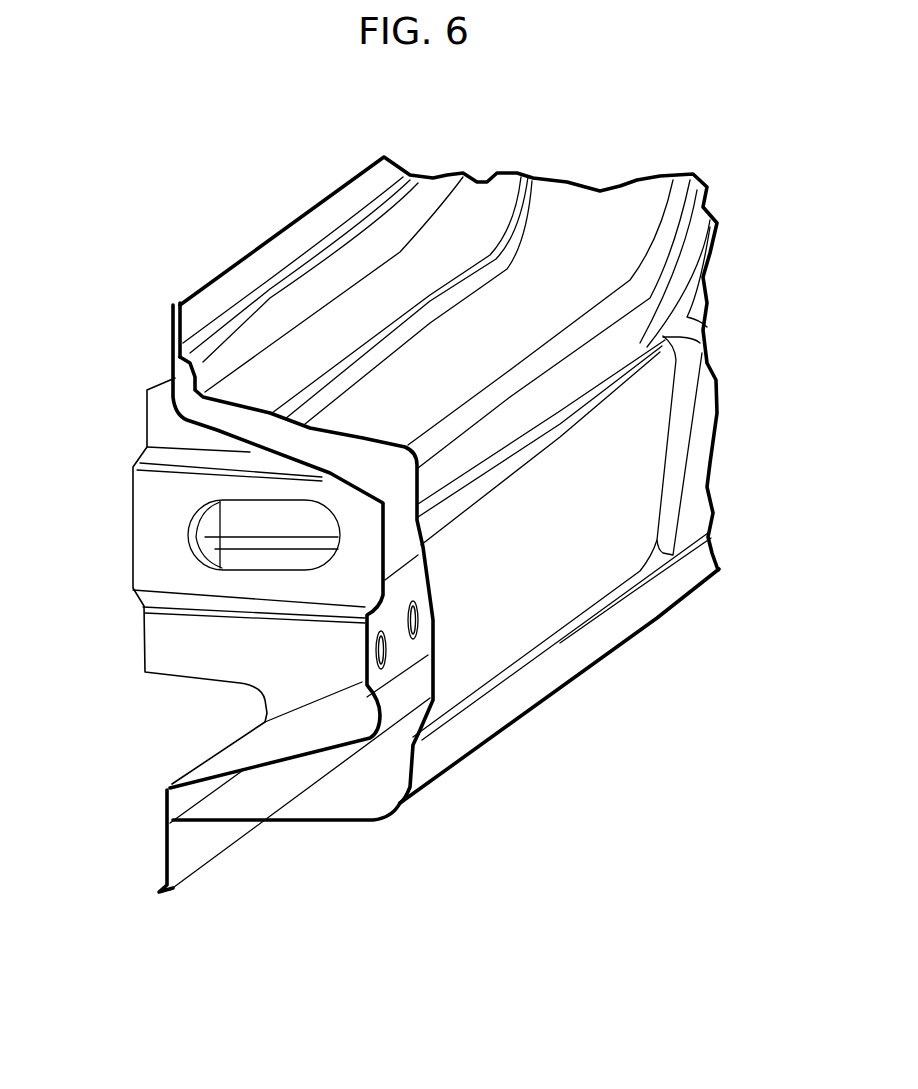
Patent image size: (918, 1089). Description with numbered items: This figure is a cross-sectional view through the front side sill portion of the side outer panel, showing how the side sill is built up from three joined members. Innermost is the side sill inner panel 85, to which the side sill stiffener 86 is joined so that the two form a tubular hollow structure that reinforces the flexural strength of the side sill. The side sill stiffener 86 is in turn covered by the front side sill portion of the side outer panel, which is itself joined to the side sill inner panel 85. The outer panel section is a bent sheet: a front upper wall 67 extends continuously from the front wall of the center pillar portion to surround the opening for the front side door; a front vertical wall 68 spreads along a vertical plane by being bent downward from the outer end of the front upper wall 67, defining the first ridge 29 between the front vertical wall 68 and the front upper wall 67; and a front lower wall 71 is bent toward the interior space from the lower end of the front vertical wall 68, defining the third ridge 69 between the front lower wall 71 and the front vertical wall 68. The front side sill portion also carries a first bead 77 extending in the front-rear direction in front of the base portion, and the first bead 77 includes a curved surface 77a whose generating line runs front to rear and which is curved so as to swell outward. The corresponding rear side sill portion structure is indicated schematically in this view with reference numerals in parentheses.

The front upper wall 67 is at (513, 313).
The side sill stiffener 86 is at (362, 465).
The side sill inner panel 85 is at (130, 500).
The front vertical wall 68 is at (600, 355).
The first ridge 29 is at (560, 348).
The curved surface 77a is at (513, 620).
The third ridge 69 is at (617, 647).
The first bead 77 is at (480, 690).
The front lower wall 71 is at (297, 822).